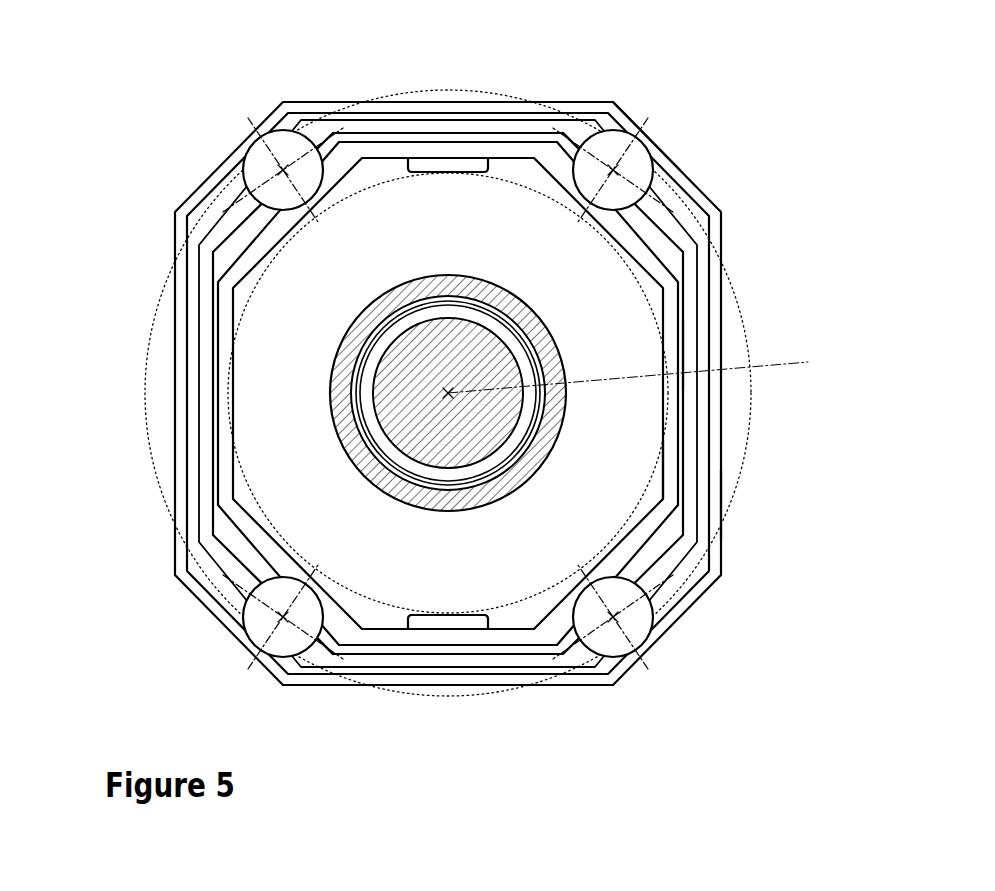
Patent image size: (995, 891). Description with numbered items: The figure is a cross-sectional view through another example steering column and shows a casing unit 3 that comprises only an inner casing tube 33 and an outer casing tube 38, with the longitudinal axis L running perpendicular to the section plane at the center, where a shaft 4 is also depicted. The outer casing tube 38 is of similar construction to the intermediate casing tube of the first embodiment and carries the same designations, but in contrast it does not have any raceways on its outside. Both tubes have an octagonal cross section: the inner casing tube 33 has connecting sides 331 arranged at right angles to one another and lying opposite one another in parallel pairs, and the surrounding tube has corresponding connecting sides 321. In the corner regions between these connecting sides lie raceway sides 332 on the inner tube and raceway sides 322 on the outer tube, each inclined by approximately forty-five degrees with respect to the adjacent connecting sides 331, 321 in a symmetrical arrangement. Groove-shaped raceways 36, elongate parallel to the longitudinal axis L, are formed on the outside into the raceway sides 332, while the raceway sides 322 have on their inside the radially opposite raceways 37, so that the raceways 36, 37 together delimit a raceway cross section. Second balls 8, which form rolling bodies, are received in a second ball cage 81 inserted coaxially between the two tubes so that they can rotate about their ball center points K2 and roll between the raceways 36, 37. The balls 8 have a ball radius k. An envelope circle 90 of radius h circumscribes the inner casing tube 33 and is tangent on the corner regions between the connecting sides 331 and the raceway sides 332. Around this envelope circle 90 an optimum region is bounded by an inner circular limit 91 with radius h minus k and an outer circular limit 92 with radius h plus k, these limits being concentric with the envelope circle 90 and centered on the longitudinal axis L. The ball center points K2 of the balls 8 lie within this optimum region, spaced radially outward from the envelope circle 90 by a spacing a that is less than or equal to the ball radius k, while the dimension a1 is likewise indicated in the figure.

The casing unit 3 is at (765, 571).
The shaft 4 is at (525, 410).
The second balls 8 is at (303, 135).
The inner casing tube 33 is at (673, 477).
The raceway 36 is at (580, 240).
The raceway 37 is at (642, 133).
The outer casing tube 38 is at (722, 503).
The second ball cage 81 is at (690, 355).
The envelope circle 90 is at (183, 320).
The inner circular limit 91 is at (218, 437).
The outer circular limit 92 is at (195, 316).
The connecting sides 321 is at (179, 334).
The raceway sides 322 is at (197, 200).
The connecting sides 331 is at (232, 462).
The raceway sides 332 is at (250, 545).
The longitudinal axis L is at (637, 369).
The ball center points K2 is at (283, 168).
The ball radius k is at (268, 173).
The envelope circle radius h is at (340, 275).
The spacing a is at (618, 160).
The dimension a1 is at (452, 158).